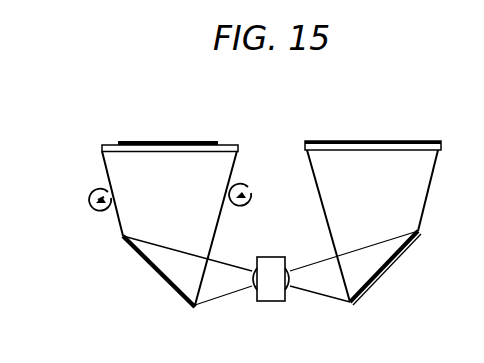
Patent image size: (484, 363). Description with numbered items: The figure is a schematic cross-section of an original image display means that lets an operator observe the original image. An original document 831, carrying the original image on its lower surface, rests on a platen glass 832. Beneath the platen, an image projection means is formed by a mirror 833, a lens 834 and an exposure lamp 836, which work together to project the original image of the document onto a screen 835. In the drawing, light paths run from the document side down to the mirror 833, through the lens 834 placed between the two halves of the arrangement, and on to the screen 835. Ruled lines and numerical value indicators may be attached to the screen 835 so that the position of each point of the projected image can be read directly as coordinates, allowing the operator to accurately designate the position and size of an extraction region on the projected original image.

The original document 831 is at (152, 141).
The platen glass 832 is at (102, 145).
The mirror 833 is at (150, 268).
The lens 834 is at (272, 302).
The screen 835 is at (342, 140).
The exposure lamp 836 is at (89, 196).